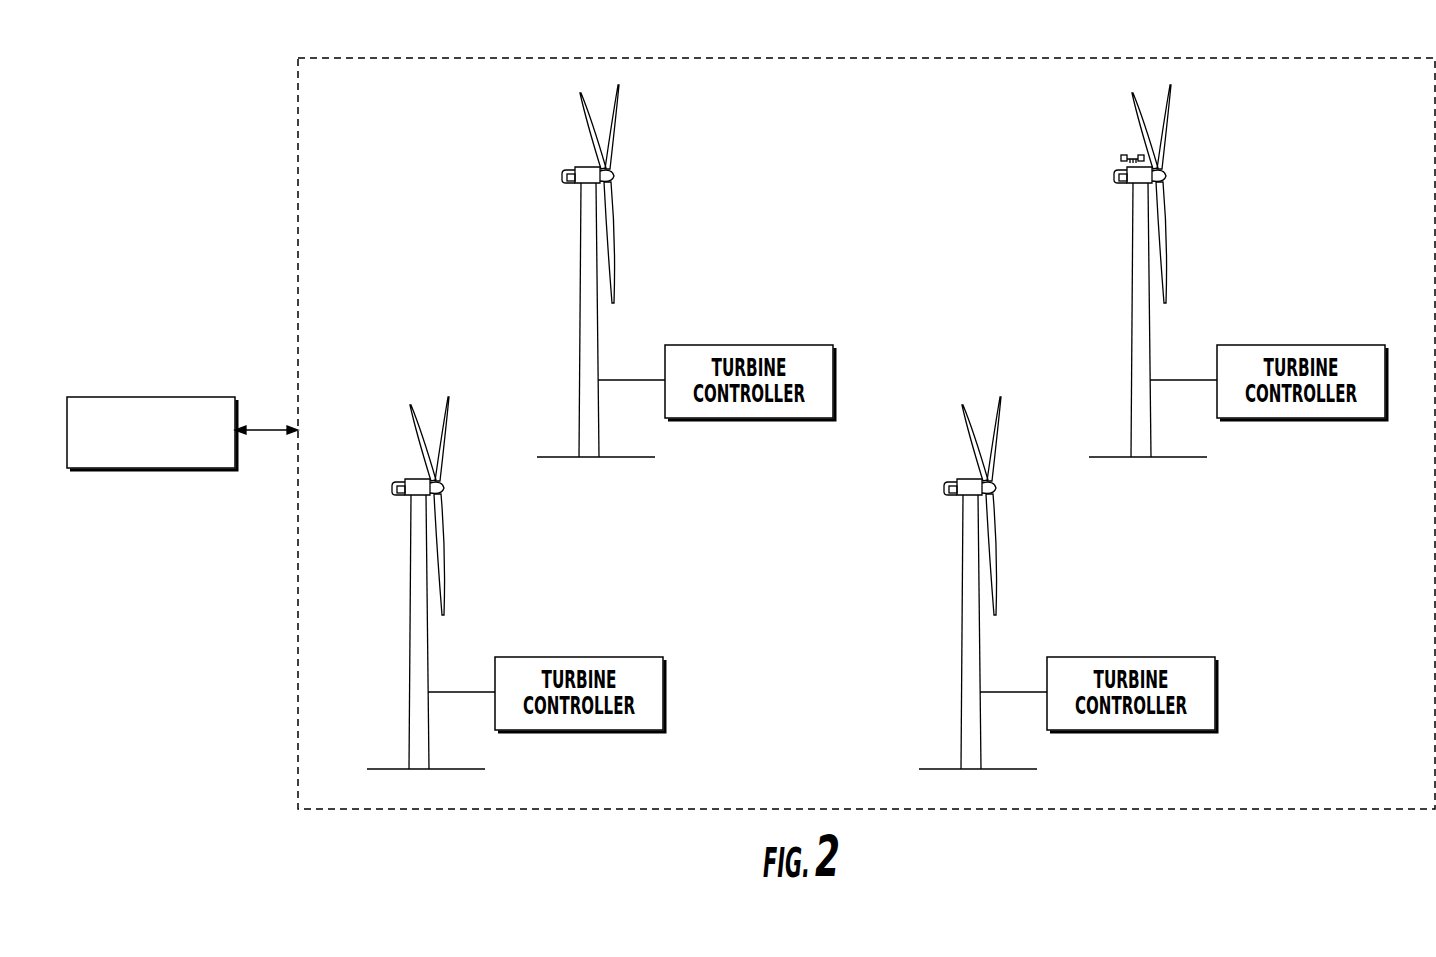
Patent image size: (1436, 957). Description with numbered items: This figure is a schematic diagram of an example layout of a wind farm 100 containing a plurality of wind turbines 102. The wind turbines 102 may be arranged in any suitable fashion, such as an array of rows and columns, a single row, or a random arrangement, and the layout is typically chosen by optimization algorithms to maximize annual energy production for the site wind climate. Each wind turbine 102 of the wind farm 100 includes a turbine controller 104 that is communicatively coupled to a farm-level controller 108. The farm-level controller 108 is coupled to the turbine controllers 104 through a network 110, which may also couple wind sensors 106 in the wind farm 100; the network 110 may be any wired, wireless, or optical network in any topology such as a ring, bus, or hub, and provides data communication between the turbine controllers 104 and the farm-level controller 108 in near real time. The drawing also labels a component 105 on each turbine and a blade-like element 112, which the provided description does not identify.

The wind farm 100 is at (165, 120).
The wind turbine 102 is at (561, 174).
The turbine controller 104 is at (908, 517).
The controller / sensor box on nacelle 105 is at (734, 357).
The wind sensors 106 is at (1123, 154).
The farm-level controller 108 is at (113, 397).
The network 110 is at (270, 430).
The rotor blade 112 is at (830, 398).